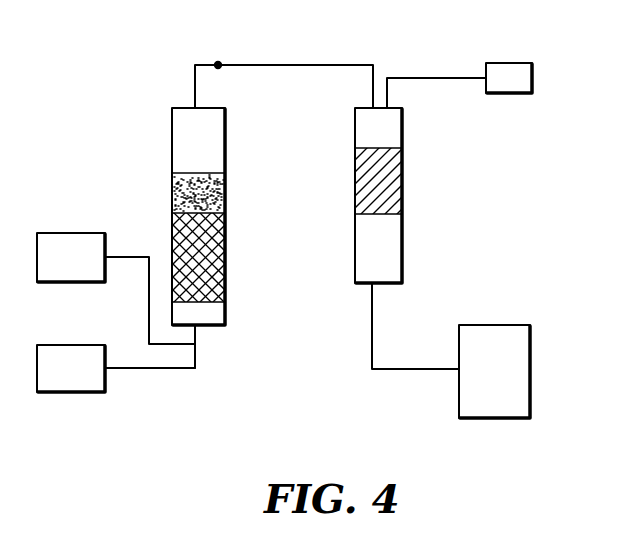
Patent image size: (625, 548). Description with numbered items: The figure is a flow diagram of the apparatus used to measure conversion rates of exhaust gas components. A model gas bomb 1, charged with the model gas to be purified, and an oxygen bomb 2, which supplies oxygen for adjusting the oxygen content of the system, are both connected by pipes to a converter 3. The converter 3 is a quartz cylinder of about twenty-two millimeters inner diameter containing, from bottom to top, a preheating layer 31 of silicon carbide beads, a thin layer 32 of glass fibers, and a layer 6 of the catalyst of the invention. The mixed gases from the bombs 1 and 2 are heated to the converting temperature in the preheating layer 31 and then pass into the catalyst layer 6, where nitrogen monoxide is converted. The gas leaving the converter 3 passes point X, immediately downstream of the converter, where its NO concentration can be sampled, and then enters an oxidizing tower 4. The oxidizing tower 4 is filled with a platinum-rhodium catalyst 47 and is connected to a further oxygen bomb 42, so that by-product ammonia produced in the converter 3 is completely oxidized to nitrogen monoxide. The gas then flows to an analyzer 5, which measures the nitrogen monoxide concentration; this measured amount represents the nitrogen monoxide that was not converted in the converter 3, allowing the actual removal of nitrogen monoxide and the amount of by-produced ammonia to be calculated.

The model gas bomb 1 is at (63, 240).
The oxygen bomb 2 is at (58, 350).
The converter 3 is at (221, 131).
The oxidizing tower 4 is at (398, 133).
The analyzer 5 is at (527, 347).
The catalyst layer 6 is at (226, 192).
The preheating layer 31 is at (226, 282).
The thin layer of glass fibers 32 is at (221, 222).
The oxygen bomb 42 is at (518, 68).
The adsorbent bed (hatched packing) 47 is at (401, 198).
The point X is at (219, 63).